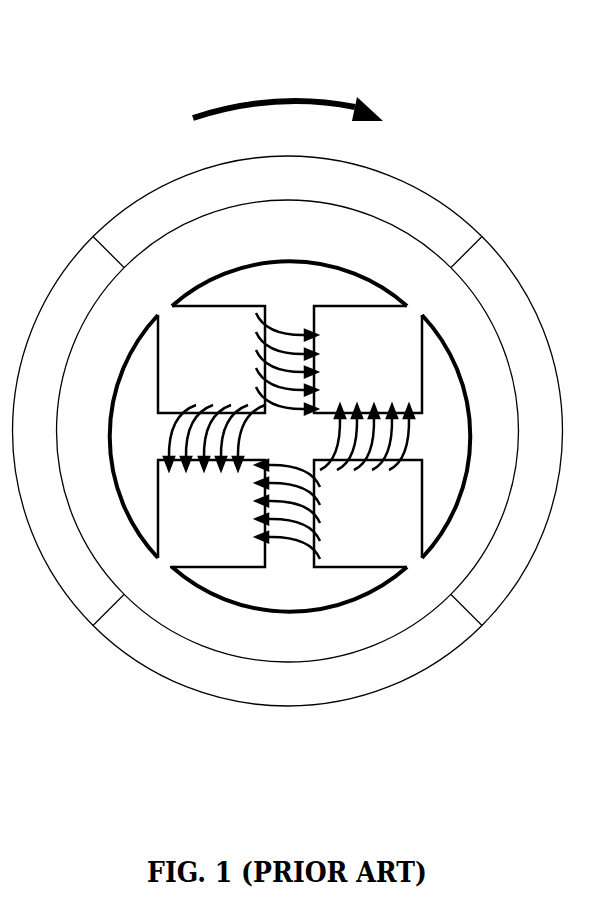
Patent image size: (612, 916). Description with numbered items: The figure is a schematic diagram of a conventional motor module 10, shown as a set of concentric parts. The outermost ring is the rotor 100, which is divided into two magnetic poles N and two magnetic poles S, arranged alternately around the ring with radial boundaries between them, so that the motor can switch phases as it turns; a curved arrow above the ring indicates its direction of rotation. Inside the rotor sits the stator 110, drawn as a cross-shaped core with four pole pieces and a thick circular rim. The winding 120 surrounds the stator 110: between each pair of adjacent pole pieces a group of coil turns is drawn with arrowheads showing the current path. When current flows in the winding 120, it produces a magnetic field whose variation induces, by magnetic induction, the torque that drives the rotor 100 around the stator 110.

The motor module 10 is at (526, 49).
The rotor 100 is at (428, 193).
The stator 110 is at (287, 256).
The winding 120 is at (187, 408).